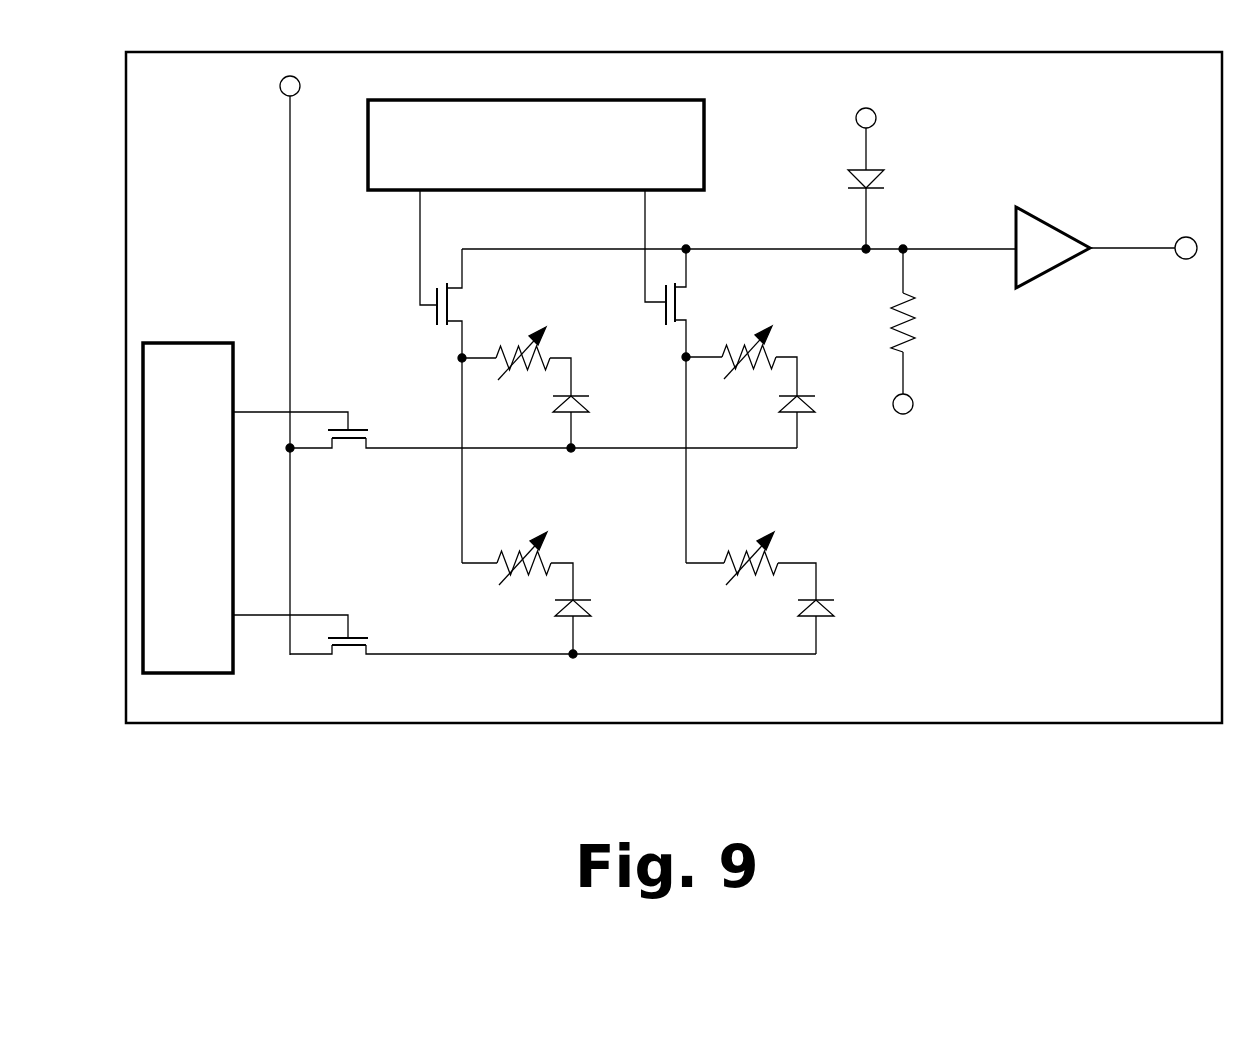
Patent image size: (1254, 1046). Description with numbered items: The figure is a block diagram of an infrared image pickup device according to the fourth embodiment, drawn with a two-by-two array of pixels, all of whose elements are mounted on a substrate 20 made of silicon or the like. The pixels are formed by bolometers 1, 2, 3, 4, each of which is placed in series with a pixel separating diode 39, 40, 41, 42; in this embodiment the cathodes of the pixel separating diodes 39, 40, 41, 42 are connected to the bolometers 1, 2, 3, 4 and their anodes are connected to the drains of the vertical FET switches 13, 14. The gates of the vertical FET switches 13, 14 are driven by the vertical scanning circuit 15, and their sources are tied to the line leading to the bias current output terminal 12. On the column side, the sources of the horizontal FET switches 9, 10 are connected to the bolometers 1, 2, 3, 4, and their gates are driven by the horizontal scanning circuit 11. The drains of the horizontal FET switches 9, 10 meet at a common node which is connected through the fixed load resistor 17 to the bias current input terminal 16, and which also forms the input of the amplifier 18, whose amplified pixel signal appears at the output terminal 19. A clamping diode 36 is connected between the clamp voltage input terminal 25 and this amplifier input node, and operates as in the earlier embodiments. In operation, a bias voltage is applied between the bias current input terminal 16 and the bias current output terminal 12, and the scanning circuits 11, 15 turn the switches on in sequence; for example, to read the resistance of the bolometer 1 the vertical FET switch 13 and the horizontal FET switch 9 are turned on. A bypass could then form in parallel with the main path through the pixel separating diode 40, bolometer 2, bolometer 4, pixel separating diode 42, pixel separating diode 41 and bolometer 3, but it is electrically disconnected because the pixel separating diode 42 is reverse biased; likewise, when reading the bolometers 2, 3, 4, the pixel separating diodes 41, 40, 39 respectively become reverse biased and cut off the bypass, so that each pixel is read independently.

The bolometer 1 is at (517, 342).
The bolometer 2 is at (740, 340).
The bolometer 3 is at (517, 548).
The bolometer 4 is at (762, 548).
The horizontal FET switch 9 is at (405, 283).
The horizontal FET switch 10 is at (630, 270).
The horizontal scanning circuit 11 is at (706, 186).
The bias current output terminal 12 is at (915, 410).
The vertical FET switch 13 is at (335, 395).
The vertical FET switch 14 is at (335, 605).
The vertical scanning circuit 15 is at (235, 655).
The bias current input terminal 16 is at (278, 88).
The fixed load resistor 17 is at (918, 328).
The amplifier 18 is at (1052, 222).
The output terminal 19 is at (1184, 236).
The substrate 20 is at (1073, 722).
The clamp voltage input terminal 25 is at (878, 118).
The clamping diode 36 is at (886, 182).
The pixel separating diode 39 is at (593, 402).
The pixel separating diode 40 is at (818, 402).
The pixel separating diode 41 is at (595, 607).
The pixel separating diode 42 is at (838, 607).